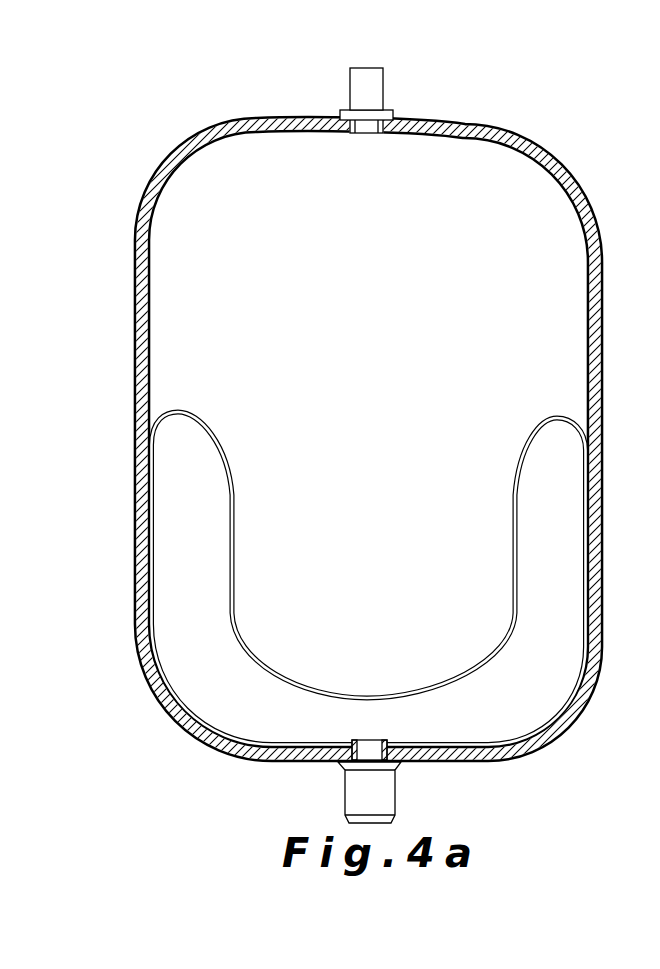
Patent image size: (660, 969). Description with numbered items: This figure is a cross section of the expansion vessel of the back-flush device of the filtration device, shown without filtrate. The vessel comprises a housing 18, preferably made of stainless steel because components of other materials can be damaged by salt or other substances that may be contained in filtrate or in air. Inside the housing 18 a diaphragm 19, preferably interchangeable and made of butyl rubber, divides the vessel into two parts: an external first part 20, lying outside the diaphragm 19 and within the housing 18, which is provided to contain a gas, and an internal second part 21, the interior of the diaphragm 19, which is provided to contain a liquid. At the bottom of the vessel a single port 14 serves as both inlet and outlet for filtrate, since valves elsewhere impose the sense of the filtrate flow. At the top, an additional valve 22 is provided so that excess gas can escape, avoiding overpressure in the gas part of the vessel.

The single port 14 is at (388, 757).
The housing 18 is at (557, 153).
The diaphragm 19 is at (517, 480).
The external first part 20 is at (382, 251).
The internal second part 21 is at (516, 704).
The additional valve 22 is at (367, 100).